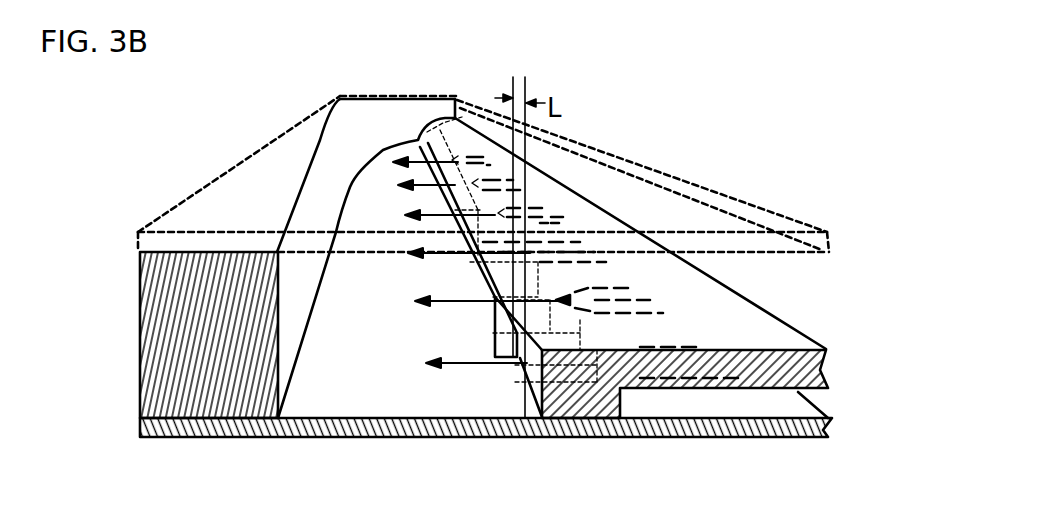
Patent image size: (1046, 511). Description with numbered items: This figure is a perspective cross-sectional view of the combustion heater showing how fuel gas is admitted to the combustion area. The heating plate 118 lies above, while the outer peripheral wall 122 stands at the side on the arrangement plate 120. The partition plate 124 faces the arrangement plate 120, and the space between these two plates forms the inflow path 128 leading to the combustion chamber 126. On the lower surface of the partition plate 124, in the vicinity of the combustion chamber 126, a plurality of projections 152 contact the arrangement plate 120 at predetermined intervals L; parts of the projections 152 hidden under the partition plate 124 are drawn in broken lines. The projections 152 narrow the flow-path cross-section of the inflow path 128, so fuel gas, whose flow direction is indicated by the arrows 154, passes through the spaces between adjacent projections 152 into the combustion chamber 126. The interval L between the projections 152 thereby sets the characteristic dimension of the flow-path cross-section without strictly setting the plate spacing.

The heating plate 118 is at (182, 242).
The arrangement plate 120 is at (245, 434).
The outer peripheral wall 122 is at (175, 360).
The partition plate 124 is at (828, 358).
The combustion chamber 126 is at (357, 370).
The inflow path 128 is at (757, 416).
The projections 152 is at (447, 222).
The arrows 154 is at (575, 330).